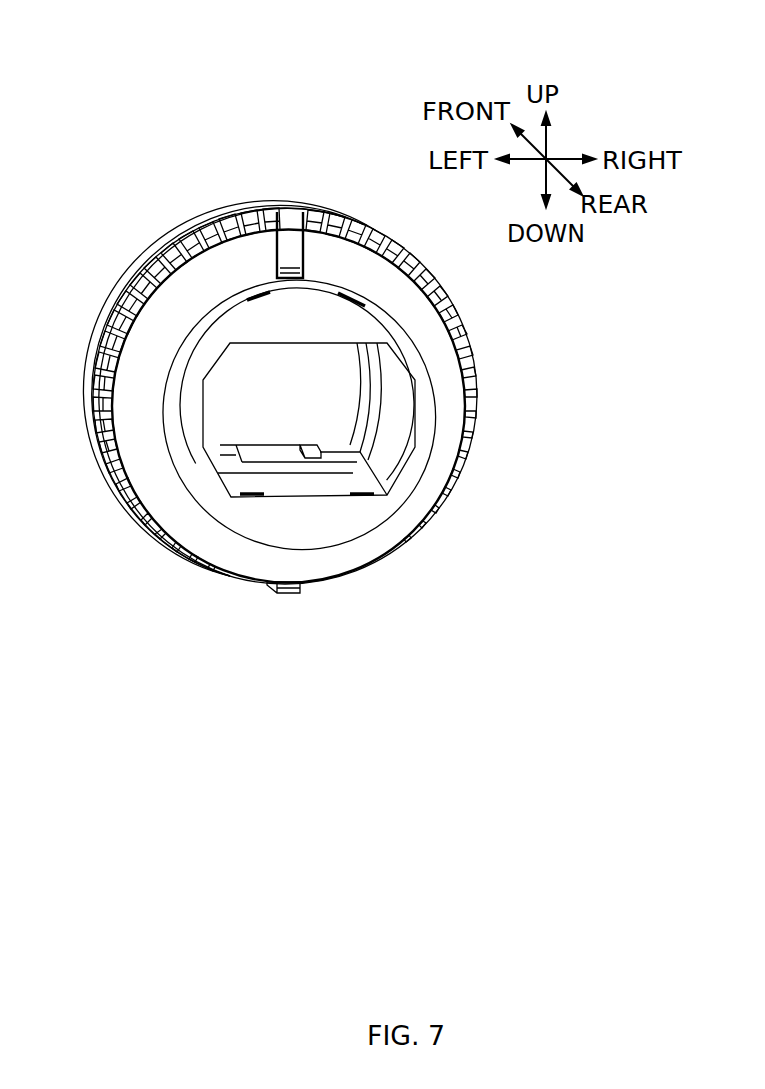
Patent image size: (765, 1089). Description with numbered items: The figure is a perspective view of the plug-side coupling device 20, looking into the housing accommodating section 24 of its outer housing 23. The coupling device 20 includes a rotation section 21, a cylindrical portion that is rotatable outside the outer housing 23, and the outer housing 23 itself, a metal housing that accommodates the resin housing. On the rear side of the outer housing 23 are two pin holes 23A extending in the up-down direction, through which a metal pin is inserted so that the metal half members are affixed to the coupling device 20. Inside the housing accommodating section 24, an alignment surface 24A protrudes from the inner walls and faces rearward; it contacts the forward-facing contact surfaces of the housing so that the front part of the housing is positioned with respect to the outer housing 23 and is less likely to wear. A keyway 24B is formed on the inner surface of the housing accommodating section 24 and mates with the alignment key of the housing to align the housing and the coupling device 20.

The coupling device 20 is at (305, 106).
The rotation section 21 is at (295, 213).
The outer housing 23 is at (337, 319).
The pin holes 23A is at (258, 490).
The housing accommodating section 24 is at (397, 453).
The alignment surface 24A is at (338, 463).
The keyway 24B is at (305, 455).